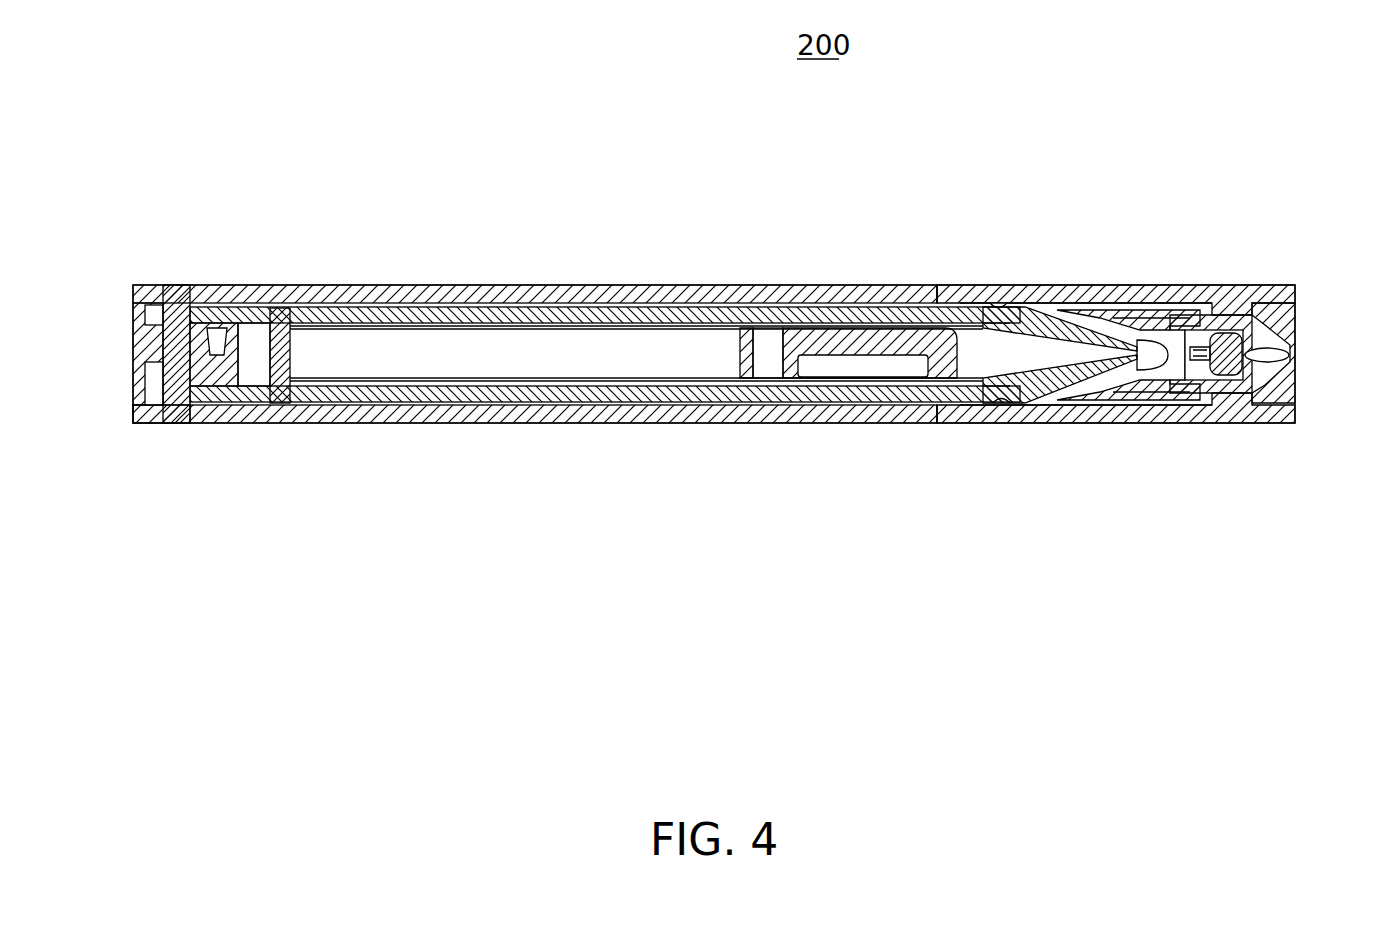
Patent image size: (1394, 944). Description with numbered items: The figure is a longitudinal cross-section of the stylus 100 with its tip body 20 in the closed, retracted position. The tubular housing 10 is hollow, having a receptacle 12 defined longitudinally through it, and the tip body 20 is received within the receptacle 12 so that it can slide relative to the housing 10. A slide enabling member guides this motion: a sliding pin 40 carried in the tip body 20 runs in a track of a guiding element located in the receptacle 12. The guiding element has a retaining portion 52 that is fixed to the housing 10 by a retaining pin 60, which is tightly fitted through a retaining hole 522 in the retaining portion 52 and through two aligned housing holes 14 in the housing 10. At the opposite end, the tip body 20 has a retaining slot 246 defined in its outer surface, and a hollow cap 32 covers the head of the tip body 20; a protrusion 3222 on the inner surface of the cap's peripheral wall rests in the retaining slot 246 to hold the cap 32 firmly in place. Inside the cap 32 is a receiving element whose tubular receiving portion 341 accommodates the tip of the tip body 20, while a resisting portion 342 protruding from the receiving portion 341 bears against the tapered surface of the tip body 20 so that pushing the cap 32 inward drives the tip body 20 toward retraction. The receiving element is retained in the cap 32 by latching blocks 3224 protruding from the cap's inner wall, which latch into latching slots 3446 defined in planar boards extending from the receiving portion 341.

The stylus 100 is at (545, 232).
The housing 10 is at (620, 302).
The receptacle 12 is at (450, 305).
The housing holes 14 is at (165, 423).
The tip body 20 is at (465, 397).
The cap 32 is at (1075, 413).
The sliding pin 40 is at (272, 303).
The retaining portion 52 is at (153, 350).
The retaining pin 60 is at (172, 285).
The retaining slot 246 is at (1000, 305).
The receiving portion 341 is at (1163, 385).
The resisting portion 342 is at (1103, 317).
The retaining hole 522 is at (193, 352).
The protrusion 3222 is at (1003, 307).
The latching blocks 3224 is at (1227, 308).
The latching slots 3446 is at (1280, 332).